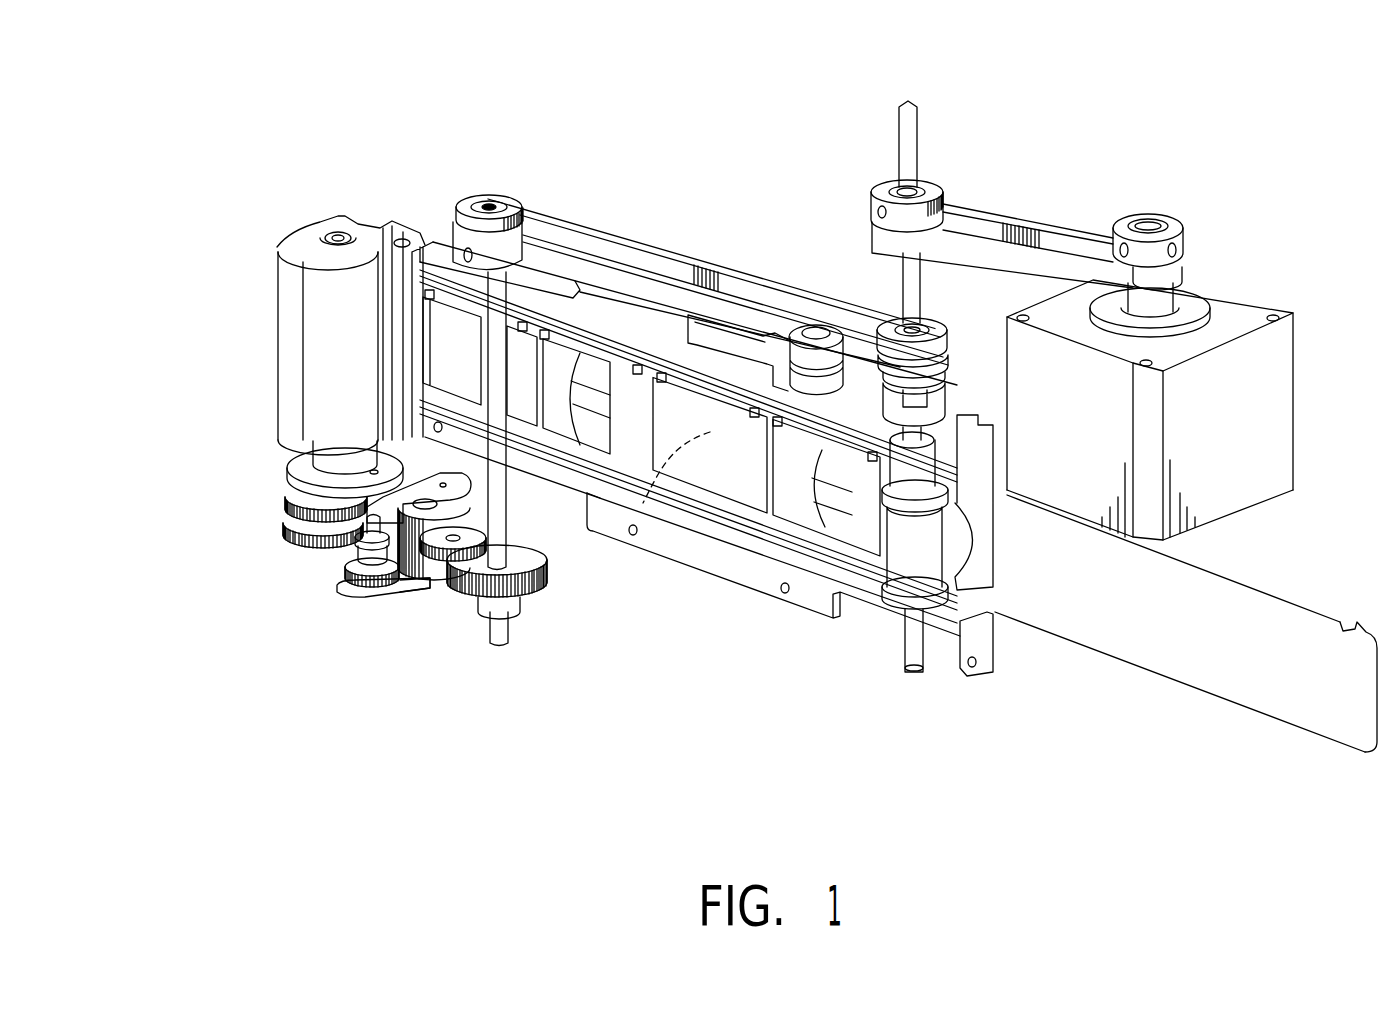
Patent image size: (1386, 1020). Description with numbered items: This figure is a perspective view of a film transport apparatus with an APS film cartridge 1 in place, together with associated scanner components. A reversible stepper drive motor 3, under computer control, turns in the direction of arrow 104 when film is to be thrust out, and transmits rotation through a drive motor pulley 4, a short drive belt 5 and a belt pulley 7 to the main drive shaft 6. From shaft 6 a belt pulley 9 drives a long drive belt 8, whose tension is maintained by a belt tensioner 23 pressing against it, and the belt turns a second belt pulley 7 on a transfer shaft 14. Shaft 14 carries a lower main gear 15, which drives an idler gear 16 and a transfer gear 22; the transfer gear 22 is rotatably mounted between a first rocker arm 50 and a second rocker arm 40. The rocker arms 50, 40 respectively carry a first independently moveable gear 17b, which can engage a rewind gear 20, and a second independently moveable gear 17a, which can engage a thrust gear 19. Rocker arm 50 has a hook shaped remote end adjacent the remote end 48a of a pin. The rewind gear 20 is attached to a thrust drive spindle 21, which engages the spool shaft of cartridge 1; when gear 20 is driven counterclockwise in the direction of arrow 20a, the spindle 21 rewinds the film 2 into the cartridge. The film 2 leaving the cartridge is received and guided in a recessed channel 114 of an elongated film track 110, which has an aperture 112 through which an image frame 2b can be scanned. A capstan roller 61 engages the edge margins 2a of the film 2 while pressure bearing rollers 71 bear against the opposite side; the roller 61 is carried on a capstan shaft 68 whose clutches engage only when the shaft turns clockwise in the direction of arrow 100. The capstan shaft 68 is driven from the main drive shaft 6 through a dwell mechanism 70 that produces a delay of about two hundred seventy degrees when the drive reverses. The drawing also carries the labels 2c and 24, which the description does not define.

The film cartridge 1 is at (318, 222).
The film 2 is at (1328, 576).
The edge margins 2a is at (604, 357).
The image frame 2b is at (440, 352).
The base plate notch corner 2c is at (1293, 718).
The drive stepper motor 3 is at (1262, 310).
The drive motor pulley 4 is at (1122, 222).
The short drive belt 5 is at (992, 212).
The main drive shaft 6 is at (912, 100).
The belt pulley 7 is at (505, 200).
The long drive belt 8 is at (600, 214).
The belt pulley 9 is at (936, 322).
The transfer shaft 14 is at (498, 645).
The lower main gear 15 is at (543, 580).
The idler gear 16 is at (488, 538).
The second independently moveable gear 17a is at (350, 592).
The first independently moveable gear 17b is at (472, 503).
The thrust gear 19 is at (285, 538).
The rewind gear 20 is at (295, 510).
The arrow 20a is at (246, 512).
The thrust drive spindle 21 is at (298, 462).
The transfer gear 22 is at (405, 592).
The belt tensioner 23 is at (822, 325).
The bracket 24 is at (1000, 634).
The second rocker arm 40 is at (372, 598).
The remote end of pin 48a is at (356, 547).
The first rocker arm 50 is at (442, 484).
The capstan roller 61 is at (898, 610).
The capstan shaft 68 is at (917, 673).
The dwell mechanism 70 is at (946, 402).
The pressure bearing rollers 71 is at (985, 547).
The arrow 100 is at (940, 683).
The arrow 104 is at (1195, 242).
The film track 110 is at (800, 594).
The aperture 112 is at (658, 504).
The recessed channel 114 is at (742, 523).